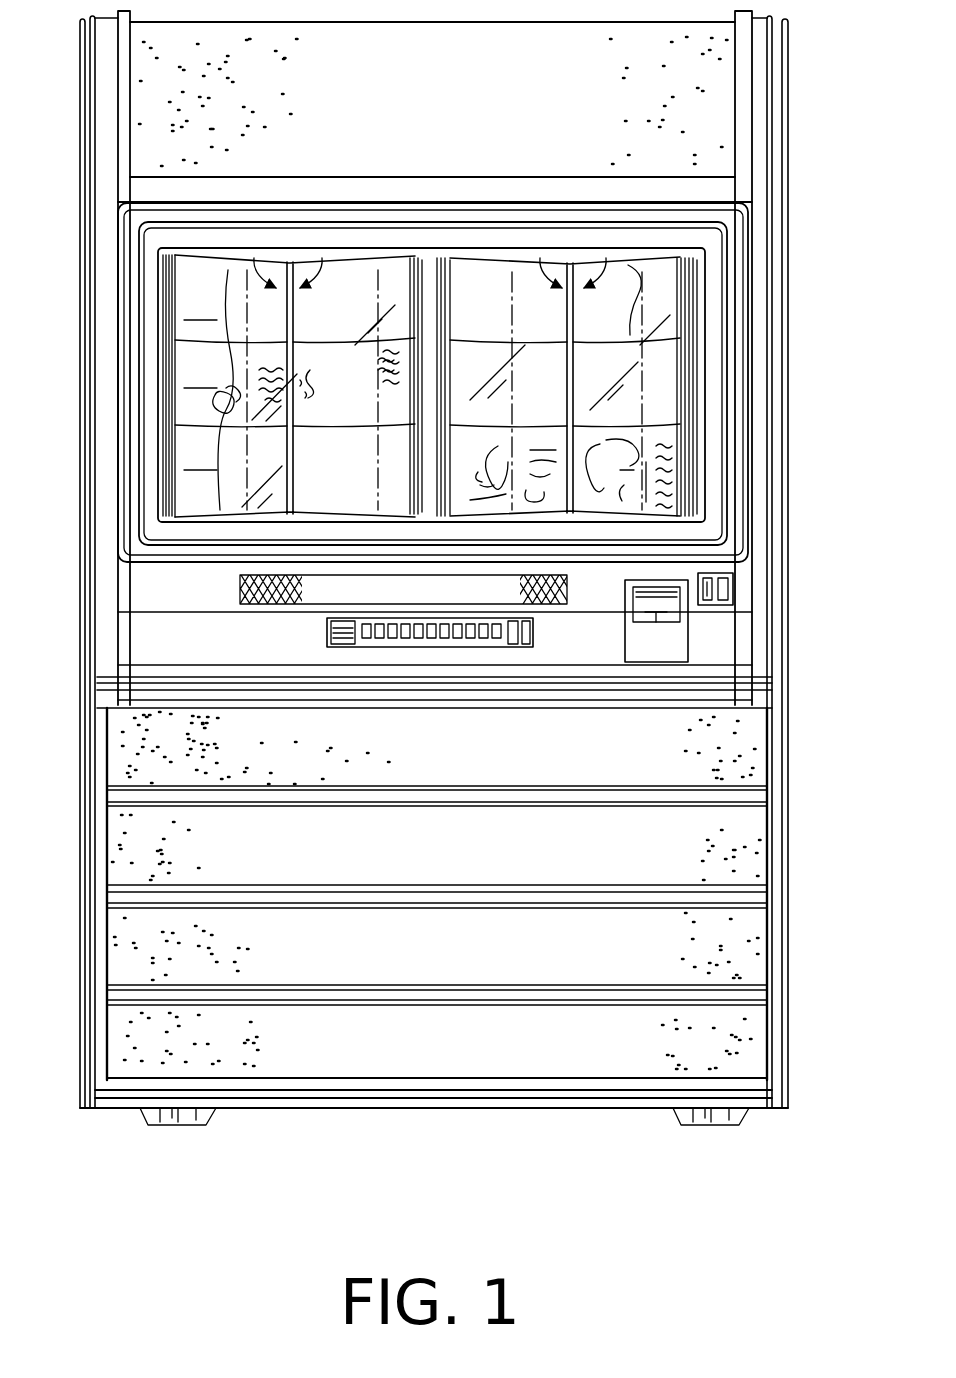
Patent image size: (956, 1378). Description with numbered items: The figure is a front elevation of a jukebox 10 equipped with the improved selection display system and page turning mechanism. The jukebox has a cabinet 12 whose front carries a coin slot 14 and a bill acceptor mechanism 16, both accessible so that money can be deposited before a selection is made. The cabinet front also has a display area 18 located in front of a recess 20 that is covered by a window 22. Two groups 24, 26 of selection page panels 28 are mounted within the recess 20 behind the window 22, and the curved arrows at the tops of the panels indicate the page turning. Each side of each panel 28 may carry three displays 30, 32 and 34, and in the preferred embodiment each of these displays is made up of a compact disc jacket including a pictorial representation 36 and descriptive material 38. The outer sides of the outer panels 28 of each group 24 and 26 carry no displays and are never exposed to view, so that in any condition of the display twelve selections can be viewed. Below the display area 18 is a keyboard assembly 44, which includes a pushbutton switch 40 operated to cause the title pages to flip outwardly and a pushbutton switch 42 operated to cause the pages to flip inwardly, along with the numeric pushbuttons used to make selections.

The jukebox 10 is at (792, 117).
The cabinet 12 is at (790, 762).
The coin slot 14 is at (708, 588).
The bill acceptor mechanism 16 is at (662, 600).
The display area 18 is at (441, 250).
The recess 20 is at (652, 321).
The window 22 is at (295, 370).
The group of selection page panels 24 is at (296, 252).
The group of selection page panels 26 is at (562, 252).
The selection page panel 28 is at (172, 283).
The display 30 is at (200, 302).
The display 32 is at (200, 370).
The display 34 is at (200, 451).
The pictorial representation 36 is at (306, 368).
The descriptive material 38 is at (382, 396).
The pushbutton switch 40 is at (518, 636).
The pushbutton switch 42 is at (527, 634).
The keyboard assembly 44 is at (460, 688).